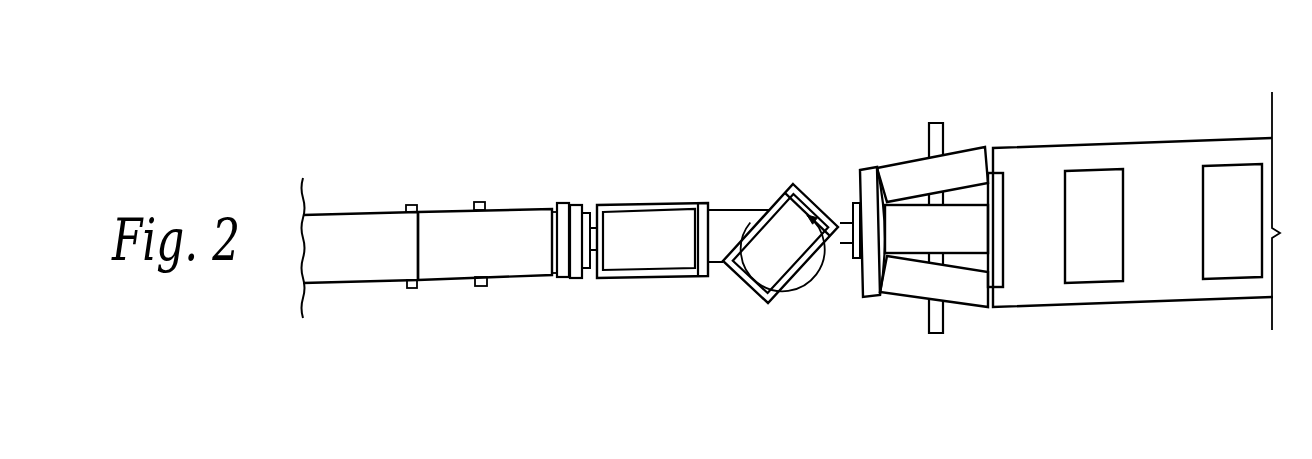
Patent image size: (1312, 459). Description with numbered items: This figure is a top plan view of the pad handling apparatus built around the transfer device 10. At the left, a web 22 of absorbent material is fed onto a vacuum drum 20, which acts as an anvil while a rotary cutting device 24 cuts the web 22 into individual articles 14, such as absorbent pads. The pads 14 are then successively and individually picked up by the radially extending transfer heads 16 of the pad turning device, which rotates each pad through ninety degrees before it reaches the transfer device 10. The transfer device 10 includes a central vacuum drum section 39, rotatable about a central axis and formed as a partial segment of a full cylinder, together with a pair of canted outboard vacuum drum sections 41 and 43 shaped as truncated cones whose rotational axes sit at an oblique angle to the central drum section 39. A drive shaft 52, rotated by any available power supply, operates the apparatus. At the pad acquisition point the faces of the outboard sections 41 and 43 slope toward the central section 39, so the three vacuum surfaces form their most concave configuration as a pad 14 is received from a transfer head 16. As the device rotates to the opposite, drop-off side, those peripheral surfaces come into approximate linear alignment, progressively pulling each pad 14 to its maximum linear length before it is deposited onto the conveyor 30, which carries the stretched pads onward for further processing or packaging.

The transfer device 10 is at (993, 121).
The articles 14 is at (668, 247).
The transfer heads 16 is at (573, 208).
The vacuum drum 20 is at (508, 224).
The web 22 is at (365, 238).
The rotary cutting device 24 is at (418, 283).
The conveyor 30 is at (1072, 155).
The central vacuum drum section 39 is at (948, 246).
The canted outboard vacuum drum section 41 is at (922, 167).
The canted outboard vacuum drum section 43 is at (908, 280).
The drive shaft 52 is at (943, 137).